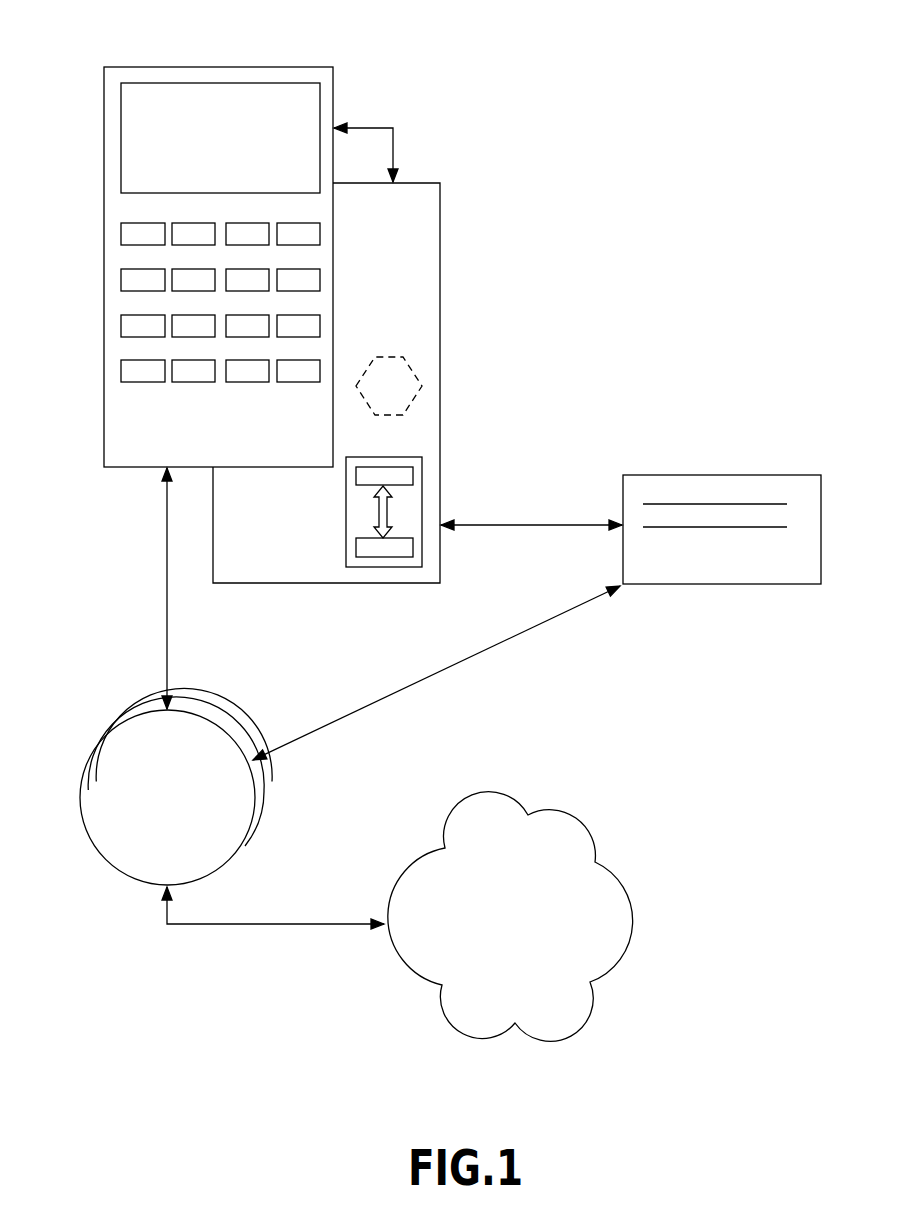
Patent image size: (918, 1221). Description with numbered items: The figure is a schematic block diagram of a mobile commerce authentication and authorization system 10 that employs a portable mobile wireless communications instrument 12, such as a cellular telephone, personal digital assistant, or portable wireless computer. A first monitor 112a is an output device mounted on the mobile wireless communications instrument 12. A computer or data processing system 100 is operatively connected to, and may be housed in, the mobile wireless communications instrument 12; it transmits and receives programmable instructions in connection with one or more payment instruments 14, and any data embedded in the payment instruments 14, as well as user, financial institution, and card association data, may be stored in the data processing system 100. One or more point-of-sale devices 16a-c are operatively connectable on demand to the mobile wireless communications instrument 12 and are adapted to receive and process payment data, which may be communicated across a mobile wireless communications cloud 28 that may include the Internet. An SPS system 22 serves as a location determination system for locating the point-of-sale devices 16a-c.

The mobile commerce authentication and authorization system 10 is at (442, 407).
The mobile wireless communications instrument 12 is at (227, 258).
The first monitor 112a is at (321, 107).
The SPS system 22 is at (393, 378).
The data processing system 100 is at (423, 473).
The payment instruments 14 is at (780, 475).
The point-of-sale devices 16a-c is at (123, 722).
The mobile wireless communications cloud 28 is at (622, 880).